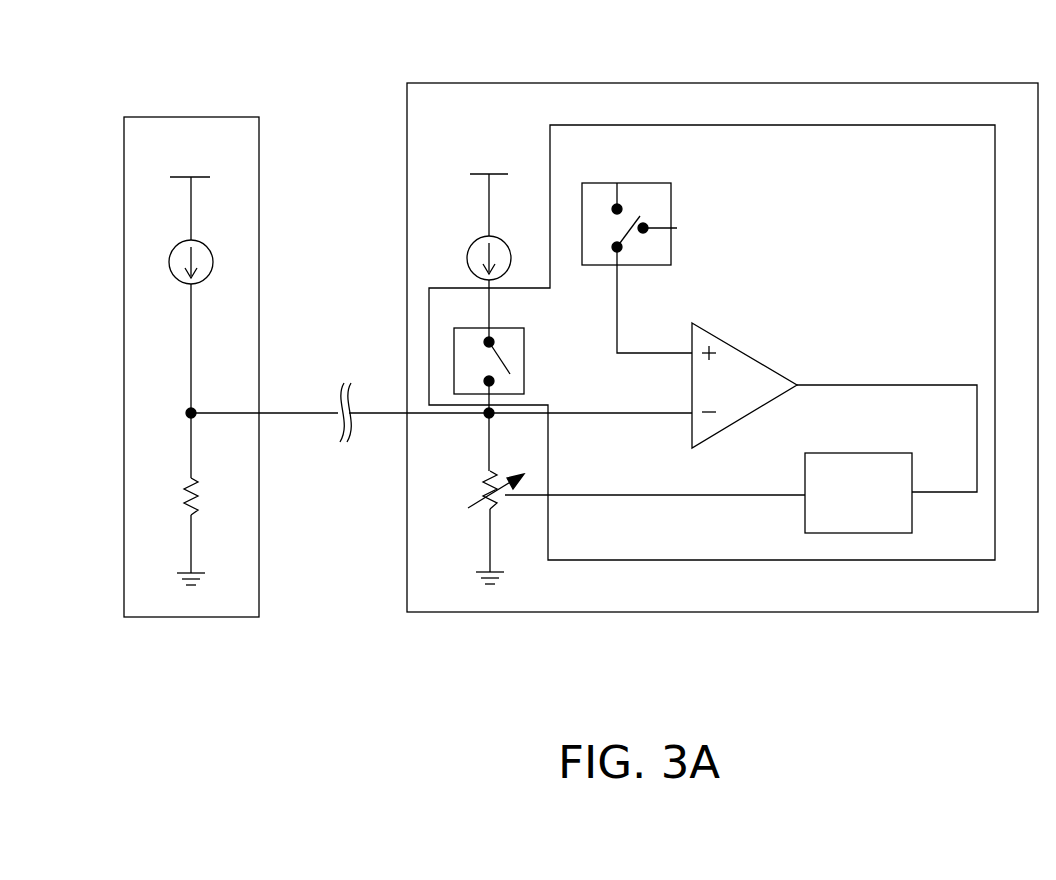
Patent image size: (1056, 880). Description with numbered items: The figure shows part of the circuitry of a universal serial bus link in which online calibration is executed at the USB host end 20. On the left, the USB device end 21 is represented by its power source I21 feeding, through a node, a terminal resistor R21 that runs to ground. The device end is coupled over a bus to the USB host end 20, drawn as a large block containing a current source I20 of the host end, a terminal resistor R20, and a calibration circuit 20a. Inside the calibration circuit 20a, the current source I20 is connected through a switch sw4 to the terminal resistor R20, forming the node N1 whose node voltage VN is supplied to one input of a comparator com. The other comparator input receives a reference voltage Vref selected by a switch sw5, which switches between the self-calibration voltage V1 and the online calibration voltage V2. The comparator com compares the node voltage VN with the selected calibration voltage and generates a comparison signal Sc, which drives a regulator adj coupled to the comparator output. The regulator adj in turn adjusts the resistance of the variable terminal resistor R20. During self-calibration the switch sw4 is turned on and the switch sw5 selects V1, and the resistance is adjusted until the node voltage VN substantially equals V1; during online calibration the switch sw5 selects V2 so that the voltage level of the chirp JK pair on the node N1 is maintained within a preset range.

The USB host end 20 is at (818, 82).
The calibration circuit 20a is at (953, 123).
The USB device end 21 is at (235, 115).
The current source of the USB host end I20 is at (510, 248).
The power source of the USB device end I21 is at (213, 255).
The terminal resistor R20 is at (620, 498).
The terminal resistor R21 is at (213, 499).
The switch sw4 is at (524, 340).
The switch sw5 is at (672, 198).
The self-calibration voltage V1 is at (675, 227).
The online calibration voltage V2 is at (617, 164).
The node N1 is at (473, 425).
The reference voltage Vref is at (654, 300).
The node voltage VN is at (655, 394).
The comparator com is at (745, 352).
The comparison signal Sc is at (887, 424).
The regulator adj is at (860, 453).